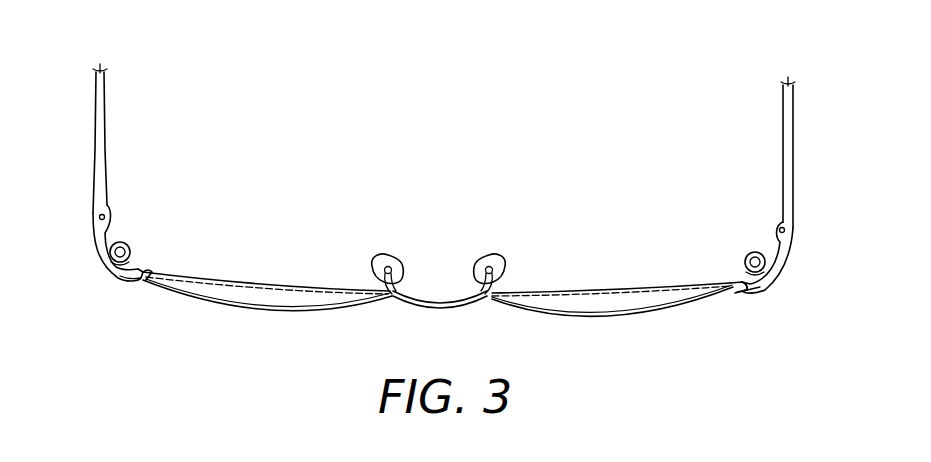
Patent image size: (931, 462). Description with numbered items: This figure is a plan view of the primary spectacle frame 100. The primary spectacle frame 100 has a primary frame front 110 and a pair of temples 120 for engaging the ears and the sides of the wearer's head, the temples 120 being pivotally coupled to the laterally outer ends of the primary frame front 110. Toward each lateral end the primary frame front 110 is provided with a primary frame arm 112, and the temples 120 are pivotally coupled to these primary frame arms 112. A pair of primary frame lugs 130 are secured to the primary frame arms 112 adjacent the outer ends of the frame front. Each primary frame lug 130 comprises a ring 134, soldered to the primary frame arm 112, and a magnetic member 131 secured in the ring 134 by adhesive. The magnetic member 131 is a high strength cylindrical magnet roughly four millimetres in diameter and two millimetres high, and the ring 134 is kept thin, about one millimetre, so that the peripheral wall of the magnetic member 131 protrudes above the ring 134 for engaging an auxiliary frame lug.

The primary spectacle frame 100 is at (614, 130).
The primary frame front 110 is at (235, 322).
The primary frame arm 112 is at (118, 281).
The temple 120 is at (98, 128).
The primary frame lug 130 is at (147, 237).
The magnetic member 131 is at (133, 255).
The ring 134 is at (116, 242).